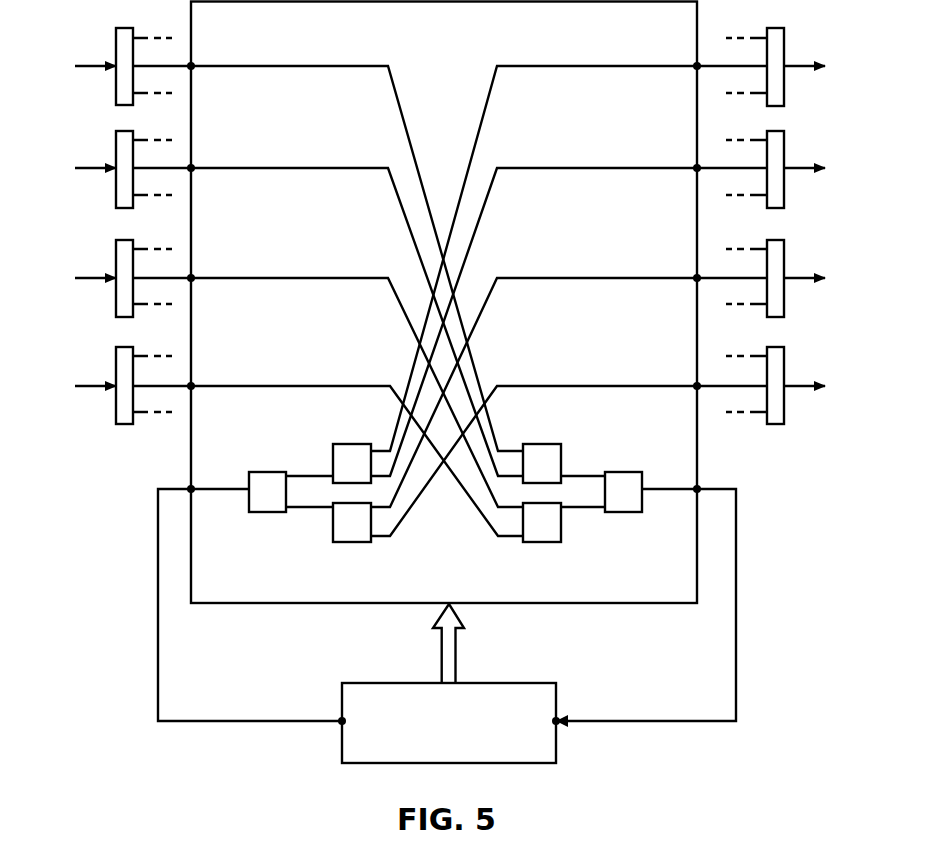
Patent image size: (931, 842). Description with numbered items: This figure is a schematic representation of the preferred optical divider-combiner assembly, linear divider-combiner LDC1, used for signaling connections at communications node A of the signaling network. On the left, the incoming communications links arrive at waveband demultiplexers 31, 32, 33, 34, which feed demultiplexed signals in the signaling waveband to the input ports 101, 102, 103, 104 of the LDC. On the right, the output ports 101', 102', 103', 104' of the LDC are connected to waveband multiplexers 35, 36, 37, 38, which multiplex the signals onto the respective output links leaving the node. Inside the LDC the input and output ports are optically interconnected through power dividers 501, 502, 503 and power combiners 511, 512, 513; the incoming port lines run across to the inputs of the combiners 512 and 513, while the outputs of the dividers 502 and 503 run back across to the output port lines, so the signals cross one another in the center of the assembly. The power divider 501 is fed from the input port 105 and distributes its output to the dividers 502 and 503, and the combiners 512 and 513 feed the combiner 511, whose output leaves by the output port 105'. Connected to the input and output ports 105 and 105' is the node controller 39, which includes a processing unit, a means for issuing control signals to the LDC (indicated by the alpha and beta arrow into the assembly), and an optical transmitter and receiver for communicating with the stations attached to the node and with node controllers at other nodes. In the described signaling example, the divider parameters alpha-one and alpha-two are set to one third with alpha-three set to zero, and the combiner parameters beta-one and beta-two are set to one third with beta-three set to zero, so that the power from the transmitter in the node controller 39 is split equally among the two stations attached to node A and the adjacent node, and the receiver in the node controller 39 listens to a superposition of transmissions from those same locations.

The waveband demultiplexer 31 is at (107, 63).
The waveband demultiplexer 32 is at (107, 164).
The waveband demultiplexer 33 is at (107, 270).
The waveband demultiplexer 34 is at (107, 375).
The waveband multiplexer 35 is at (788, 64).
The waveband multiplexer 36 is at (789, 158).
The waveband multiplexer 37 is at (787, 270).
The waveband multiplexer 38 is at (788, 375).
The node controller 39 is at (407, 687).
The input port 101 is at (328, 236).
The input port 102 is at (328, 299).
The input port 103 is at (328, 370).
The input port 104 is at (328, 440).
The output port 101' is at (569, 236).
The output port 102' is at (569, 299).
The output port 103' is at (569, 370).
The output port 104' is at (569, 440).
The input port 105 is at (252, 582).
The output port 105' is at (644, 585).
The power divider 501 is at (288, 460).
The power divider 502 is at (344, 437).
The power divider 503 is at (349, 549).
The power combiner 511 is at (603, 460).
The power combiner 512 is at (541, 437).
The power combiner 513 is at (541, 549).